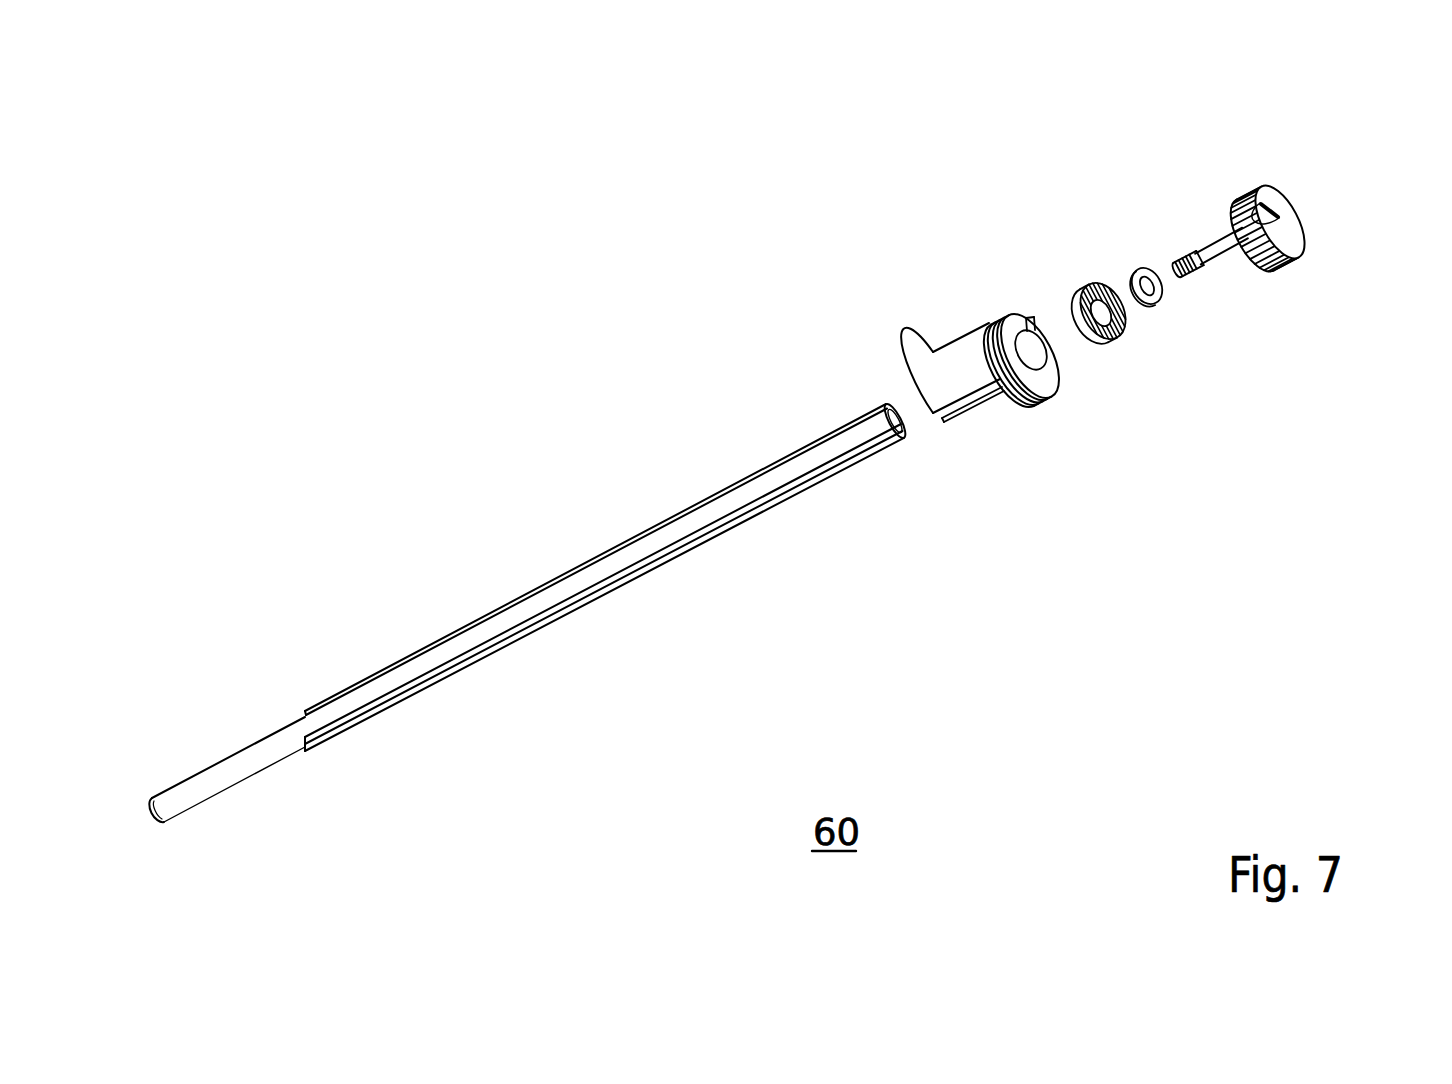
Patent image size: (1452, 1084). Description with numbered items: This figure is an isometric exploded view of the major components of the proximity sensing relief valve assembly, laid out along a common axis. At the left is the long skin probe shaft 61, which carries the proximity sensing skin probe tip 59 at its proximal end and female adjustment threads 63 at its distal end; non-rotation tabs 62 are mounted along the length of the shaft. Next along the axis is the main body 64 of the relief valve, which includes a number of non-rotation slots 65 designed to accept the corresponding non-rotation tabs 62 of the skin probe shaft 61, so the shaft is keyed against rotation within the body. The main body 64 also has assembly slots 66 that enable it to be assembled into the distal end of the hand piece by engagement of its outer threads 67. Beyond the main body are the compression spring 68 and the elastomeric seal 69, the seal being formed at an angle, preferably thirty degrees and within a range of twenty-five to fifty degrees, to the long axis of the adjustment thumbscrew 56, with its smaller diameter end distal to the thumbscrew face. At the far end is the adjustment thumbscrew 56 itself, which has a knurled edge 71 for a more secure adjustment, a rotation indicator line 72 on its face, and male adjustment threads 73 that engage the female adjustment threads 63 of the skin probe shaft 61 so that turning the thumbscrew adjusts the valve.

The adjustment thumbscrew 56 is at (1228, 253).
The proximity sensing skin probe tip 59 is at (160, 825).
The skin probe shaft 61 is at (280, 730).
The non-rotation tabs 62 is at (693, 553).
The female adjustment threads 63 is at (905, 437).
The main body 64 is at (960, 367).
The non-rotation slots 65 is at (972, 413).
The assembly slots 66 is at (1028, 322).
The outer threads 67 is at (1043, 397).
The compression spring 68 is at (1118, 337).
The elastomeric seal 69 is at (1147, 268).
The knurled edge 71 is at (1256, 178).
The rotation indicator line 72 is at (1280, 203).
The male adjustment threads 73 is at (1188, 277).